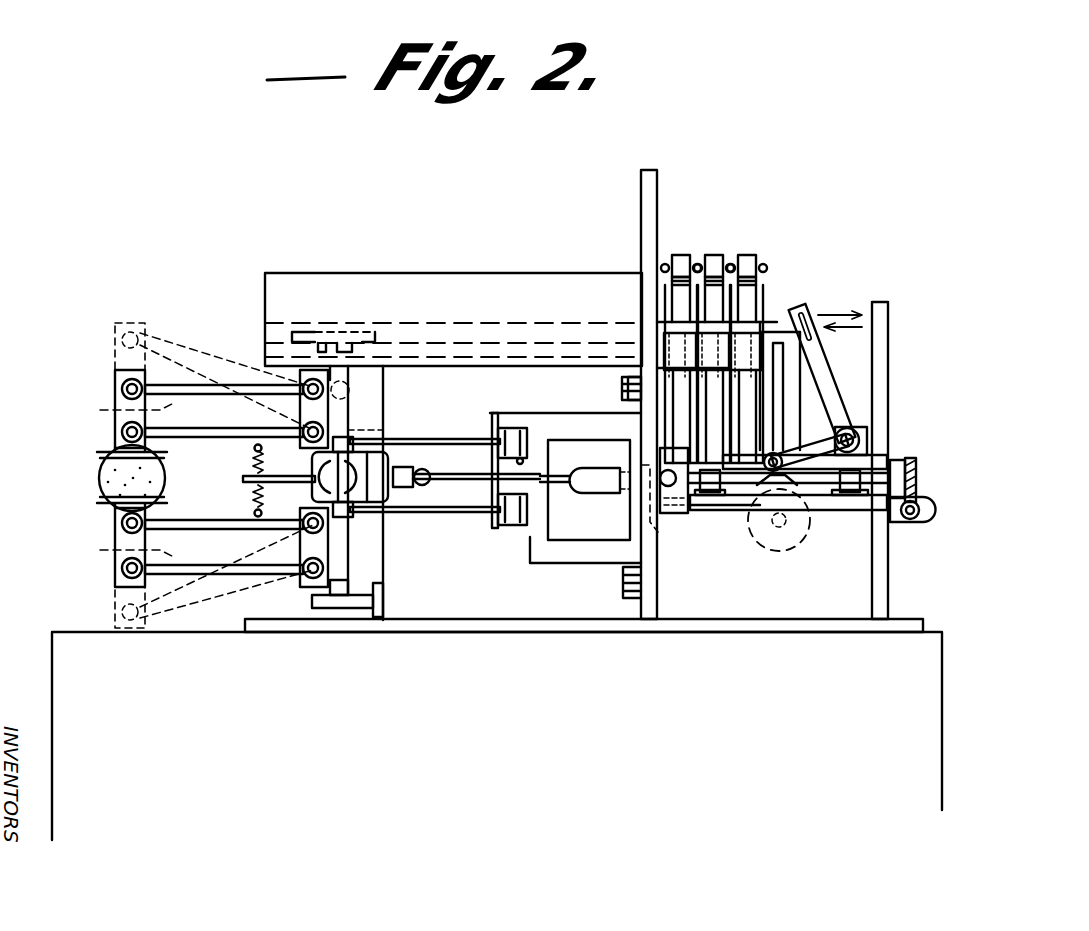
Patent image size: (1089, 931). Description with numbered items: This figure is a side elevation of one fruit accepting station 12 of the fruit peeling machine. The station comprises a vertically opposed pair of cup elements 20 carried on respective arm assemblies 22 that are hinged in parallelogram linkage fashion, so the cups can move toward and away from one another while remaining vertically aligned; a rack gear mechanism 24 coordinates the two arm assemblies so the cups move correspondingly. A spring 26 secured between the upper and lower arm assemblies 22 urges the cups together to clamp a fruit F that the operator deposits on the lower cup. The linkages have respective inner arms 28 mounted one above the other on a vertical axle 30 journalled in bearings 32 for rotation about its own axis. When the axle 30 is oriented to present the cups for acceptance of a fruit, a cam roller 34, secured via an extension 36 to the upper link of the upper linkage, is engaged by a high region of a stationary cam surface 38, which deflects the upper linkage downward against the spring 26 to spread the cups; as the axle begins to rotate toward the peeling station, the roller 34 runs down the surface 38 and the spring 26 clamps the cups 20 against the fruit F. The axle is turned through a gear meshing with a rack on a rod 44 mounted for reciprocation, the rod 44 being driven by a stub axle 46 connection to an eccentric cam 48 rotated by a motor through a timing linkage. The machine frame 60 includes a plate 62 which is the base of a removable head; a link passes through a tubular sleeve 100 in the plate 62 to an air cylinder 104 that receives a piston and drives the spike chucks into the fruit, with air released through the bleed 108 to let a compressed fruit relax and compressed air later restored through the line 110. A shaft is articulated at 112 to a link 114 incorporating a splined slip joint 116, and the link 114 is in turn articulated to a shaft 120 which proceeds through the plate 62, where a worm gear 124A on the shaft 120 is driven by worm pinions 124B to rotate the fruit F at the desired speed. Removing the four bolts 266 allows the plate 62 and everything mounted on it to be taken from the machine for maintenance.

The fruit accepting station 12 is at (50, 440).
The fruit F is at (100, 490).
The cup elements 20 is at (160, 458).
The arm assemblies 22 is at (215, 385).
The rack gear mechanism 24 is at (265, 333).
The spring 26 is at (254, 468).
The inner arms 28 is at (280, 420).
The vertical axle 30 is at (312, 595).
The bearings 32 is at (334, 336).
The cam roller 34 is at (355, 397).
The extension 36 is at (360, 413).
The cam surface 38 is at (355, 383).
The rod 44 is at (773, 328).
The stub axle 46 is at (833, 442).
The eccentric cam 48 is at (790, 582).
The frame 60 is at (660, 602).
The plate 62 is at (628, 402).
The tubular sleeve 100 is at (662, 533).
The air cylinder 104 is at (628, 480).
The bleed 108 is at (600, 512).
The line 110 is at (652, 468).
The articulation 112 is at (406, 505).
The link 114 is at (495, 520).
The splined slip joint 116 is at (580, 497).
The shaft 120 is at (845, 495).
The worm gear 124A is at (918, 478).
The worm pinions 124B is at (935, 510).
The bolts 266 is at (622, 380).